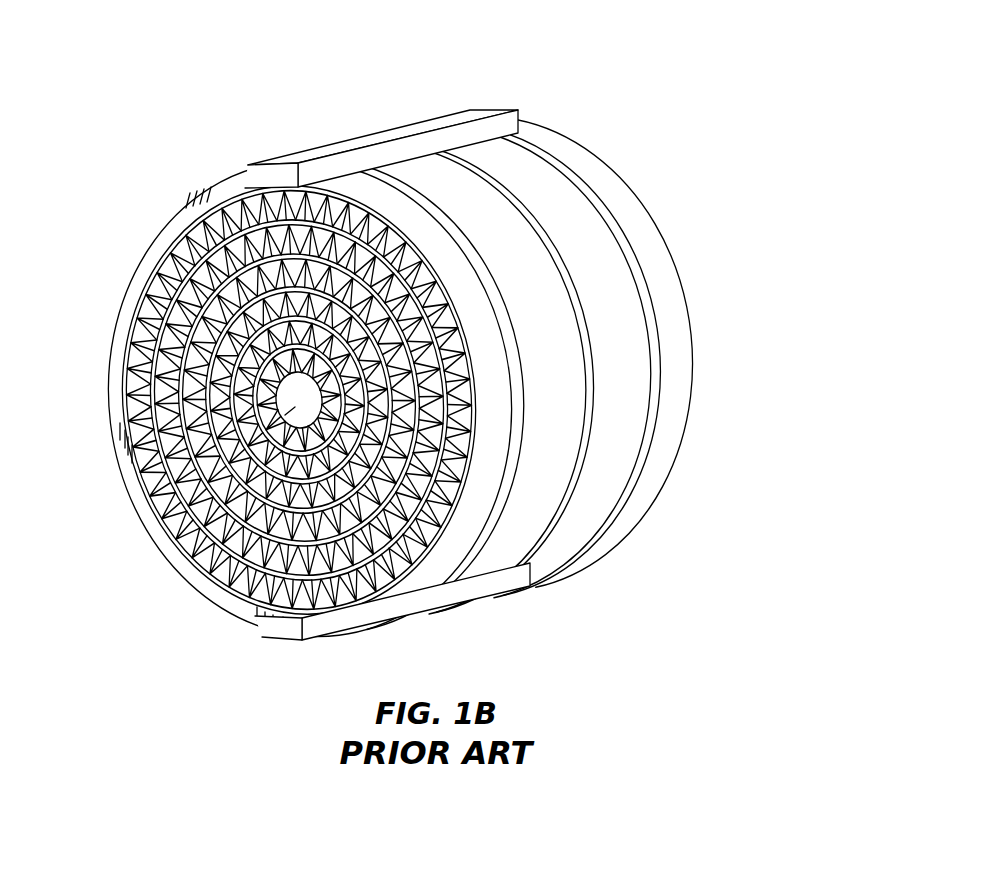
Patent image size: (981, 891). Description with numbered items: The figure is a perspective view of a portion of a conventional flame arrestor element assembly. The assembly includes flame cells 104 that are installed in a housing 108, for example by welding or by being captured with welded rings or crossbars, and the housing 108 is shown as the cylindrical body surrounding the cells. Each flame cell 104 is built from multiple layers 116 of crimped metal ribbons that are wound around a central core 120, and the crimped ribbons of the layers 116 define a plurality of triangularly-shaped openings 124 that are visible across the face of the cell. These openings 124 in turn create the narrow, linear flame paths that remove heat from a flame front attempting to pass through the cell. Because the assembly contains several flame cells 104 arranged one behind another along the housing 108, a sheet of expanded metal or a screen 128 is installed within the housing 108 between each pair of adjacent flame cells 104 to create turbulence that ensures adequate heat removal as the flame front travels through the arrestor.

The flame cell 104 is at (602, 183).
The housing 108 is at (210, 175).
The layers of crimped metal ribbons 116 is at (400, 350).
The core 120 is at (152, 507).
The triangularly-shaped openings 124 is at (137, 399).
The screen 128 is at (380, 163).